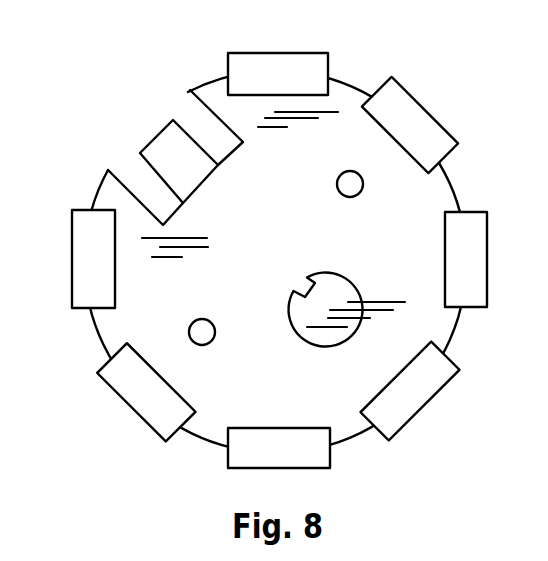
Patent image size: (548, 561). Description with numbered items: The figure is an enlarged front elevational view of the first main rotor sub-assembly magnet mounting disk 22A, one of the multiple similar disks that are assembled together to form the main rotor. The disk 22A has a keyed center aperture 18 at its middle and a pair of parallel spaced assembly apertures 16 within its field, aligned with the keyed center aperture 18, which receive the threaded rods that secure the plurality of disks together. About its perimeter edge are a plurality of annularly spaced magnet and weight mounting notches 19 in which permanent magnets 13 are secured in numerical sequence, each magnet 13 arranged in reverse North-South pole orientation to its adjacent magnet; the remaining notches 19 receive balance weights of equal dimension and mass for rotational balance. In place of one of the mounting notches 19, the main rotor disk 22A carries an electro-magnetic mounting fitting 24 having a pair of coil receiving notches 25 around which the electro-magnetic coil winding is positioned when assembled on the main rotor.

The permanent magnet 13 is at (253, 67).
The assembly aperture 16 is at (342, 172).
The keyed center aperture 18 is at (310, 240).
The magnet and weight mounting notch 19 is at (280, 427).
The main rotor disk 22A is at (352, 82).
The electro-magnetic mounting fitting 24 is at (153, 135).
The coil receiving notch 25 is at (232, 157).